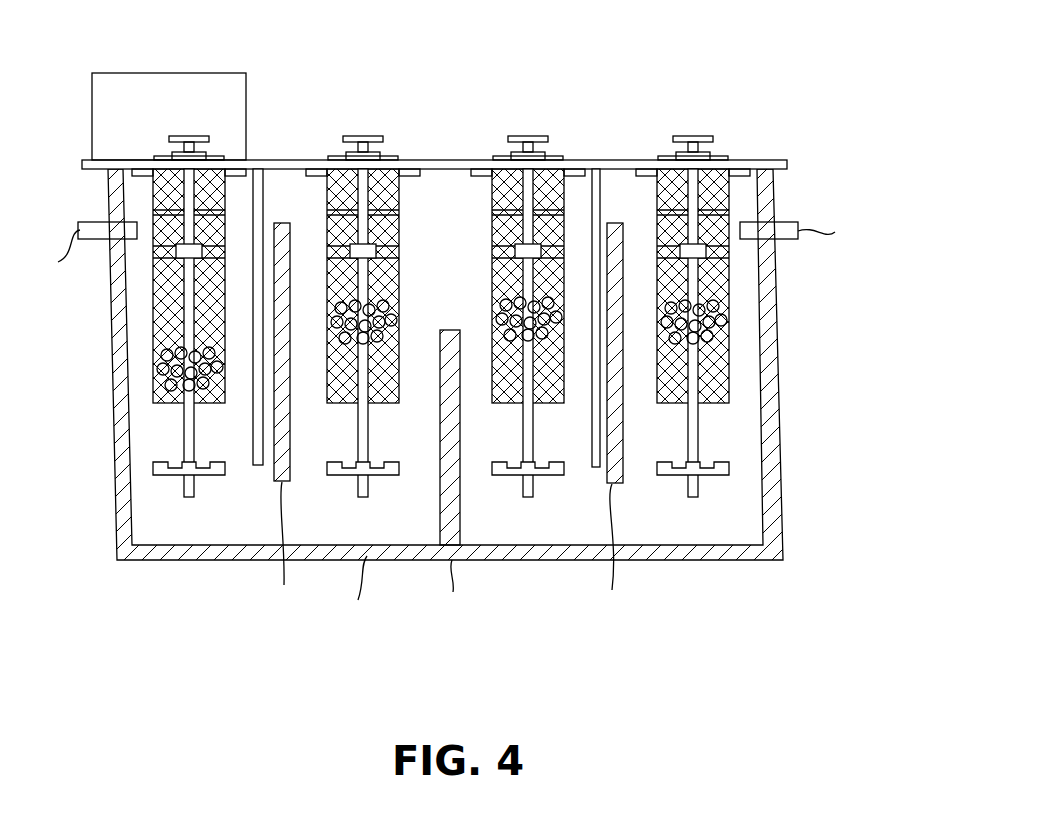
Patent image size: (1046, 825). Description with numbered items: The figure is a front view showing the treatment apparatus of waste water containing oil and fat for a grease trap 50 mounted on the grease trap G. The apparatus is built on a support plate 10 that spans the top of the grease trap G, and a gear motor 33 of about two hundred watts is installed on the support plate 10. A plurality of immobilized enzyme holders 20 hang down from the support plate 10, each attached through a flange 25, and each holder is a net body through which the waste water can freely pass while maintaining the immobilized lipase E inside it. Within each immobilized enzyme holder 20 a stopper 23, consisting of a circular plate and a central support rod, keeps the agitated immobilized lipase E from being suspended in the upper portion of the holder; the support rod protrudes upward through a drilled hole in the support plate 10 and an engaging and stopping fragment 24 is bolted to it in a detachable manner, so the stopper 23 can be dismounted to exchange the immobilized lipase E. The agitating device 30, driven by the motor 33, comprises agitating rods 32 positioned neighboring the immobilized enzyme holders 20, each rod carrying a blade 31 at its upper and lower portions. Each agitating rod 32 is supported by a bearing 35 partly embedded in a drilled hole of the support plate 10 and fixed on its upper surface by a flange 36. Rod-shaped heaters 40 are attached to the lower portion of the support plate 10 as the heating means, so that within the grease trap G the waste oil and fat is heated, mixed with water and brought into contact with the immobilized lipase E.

The support plate 10 is at (445, 160).
The immobilized enzyme holder 20 is at (163, 392).
The stopper 23 is at (667, 215).
The engaging and stopping fragment 24 is at (697, 160).
The flange 25 is at (768, 184).
The agitating device 30 is at (205, 137).
The blade 31 is at (726, 253).
The agitating rod 32 is at (195, 438).
The motor 33 is at (178, 100).
The bearing 35 is at (672, 157).
The flange 36 is at (718, 160).
The heater 40 is at (258, 169).
The treatment apparatus of waste water containing oil and fat for a grease trap 50 is at (473, 290).
The immobilized lipase E is at (168, 353).
The grease trap G is at (361, 591).